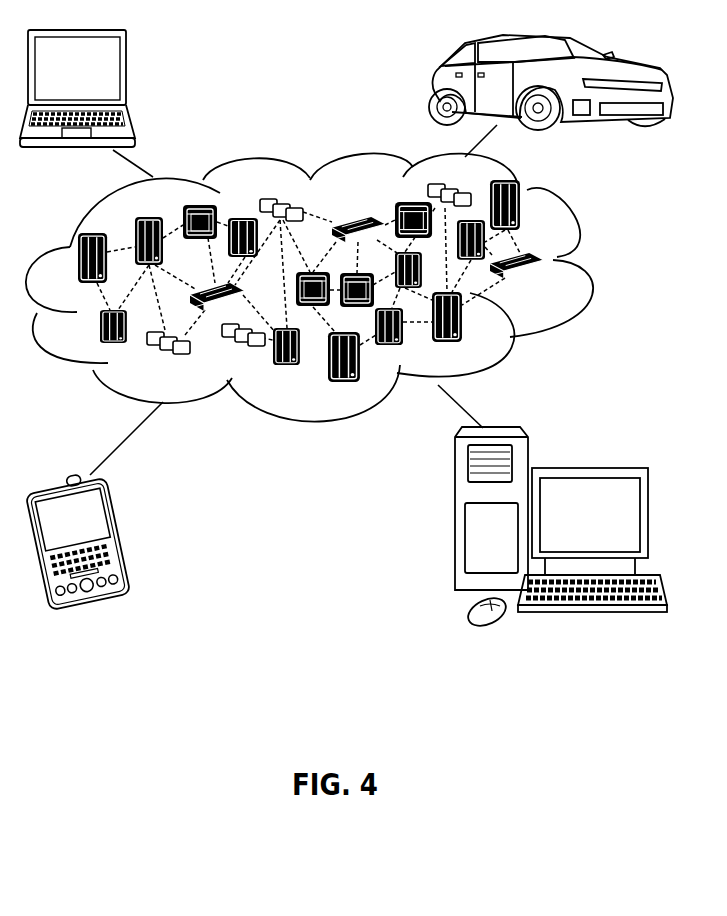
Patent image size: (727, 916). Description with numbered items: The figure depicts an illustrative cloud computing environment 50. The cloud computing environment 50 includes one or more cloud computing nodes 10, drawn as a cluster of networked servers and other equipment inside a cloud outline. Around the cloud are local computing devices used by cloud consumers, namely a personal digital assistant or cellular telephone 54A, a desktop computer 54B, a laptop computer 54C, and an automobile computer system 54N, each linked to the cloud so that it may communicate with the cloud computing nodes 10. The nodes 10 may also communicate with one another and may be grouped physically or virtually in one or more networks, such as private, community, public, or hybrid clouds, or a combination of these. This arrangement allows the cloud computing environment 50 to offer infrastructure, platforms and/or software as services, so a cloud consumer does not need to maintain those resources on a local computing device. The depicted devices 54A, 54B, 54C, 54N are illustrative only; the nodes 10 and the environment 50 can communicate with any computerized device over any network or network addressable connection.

The cloud computing node 10 is at (553, 293).
The cloud computing environment 50 is at (587, 267).
The personal digital assistant or cellular telephone 54A is at (118, 535).
The desktop computer 54B is at (585, 467).
The laptop computer 54C is at (128, 74).
The automobile computer system 54N is at (430, 79).